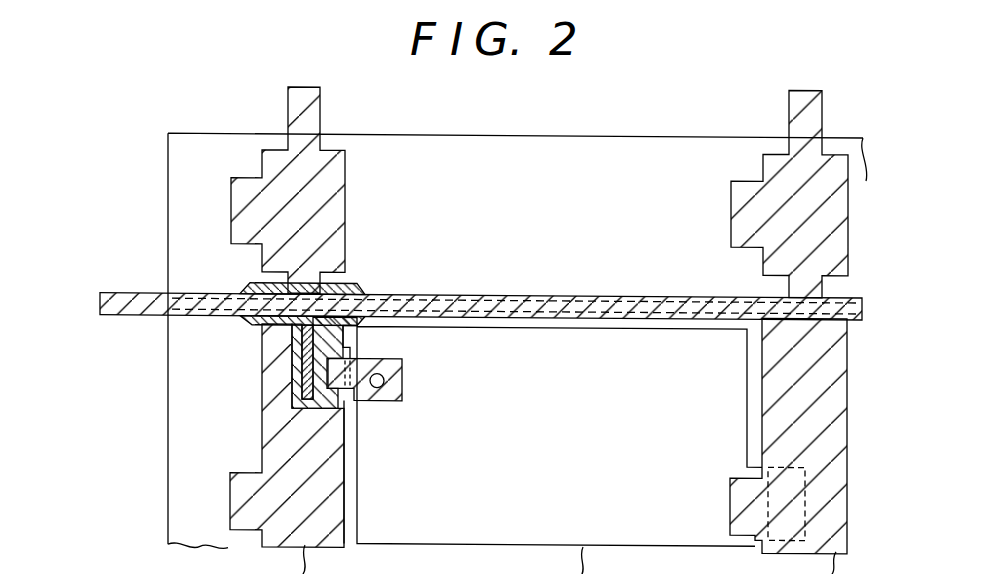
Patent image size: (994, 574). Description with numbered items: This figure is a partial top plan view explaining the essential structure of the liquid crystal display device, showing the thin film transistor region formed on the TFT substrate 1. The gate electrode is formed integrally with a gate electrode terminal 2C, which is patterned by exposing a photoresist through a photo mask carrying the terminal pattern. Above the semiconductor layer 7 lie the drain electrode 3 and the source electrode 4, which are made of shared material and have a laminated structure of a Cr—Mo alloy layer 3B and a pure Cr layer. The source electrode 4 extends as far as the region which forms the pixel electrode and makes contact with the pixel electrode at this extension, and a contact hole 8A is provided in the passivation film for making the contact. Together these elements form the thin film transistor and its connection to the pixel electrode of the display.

The TFT substrate 1 is at (204, 138).
The gate electrode terminal 2C is at (304, 92).
The drain electrode 3 is at (306, 377).
The Cr—Mo alloy layer 3B is at (99, 299).
The source electrode 4 is at (339, 407).
The semiconductor layer 7 is at (360, 289).
The contact hole 8A is at (384, 377).